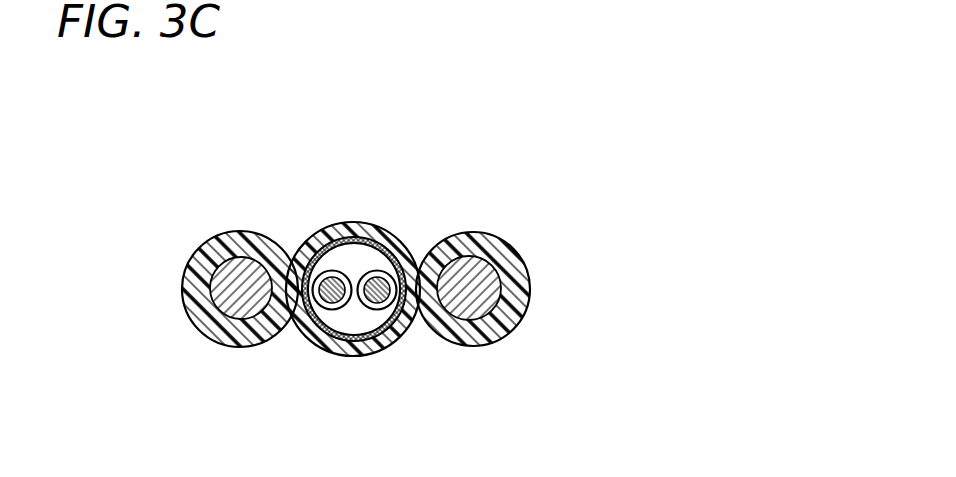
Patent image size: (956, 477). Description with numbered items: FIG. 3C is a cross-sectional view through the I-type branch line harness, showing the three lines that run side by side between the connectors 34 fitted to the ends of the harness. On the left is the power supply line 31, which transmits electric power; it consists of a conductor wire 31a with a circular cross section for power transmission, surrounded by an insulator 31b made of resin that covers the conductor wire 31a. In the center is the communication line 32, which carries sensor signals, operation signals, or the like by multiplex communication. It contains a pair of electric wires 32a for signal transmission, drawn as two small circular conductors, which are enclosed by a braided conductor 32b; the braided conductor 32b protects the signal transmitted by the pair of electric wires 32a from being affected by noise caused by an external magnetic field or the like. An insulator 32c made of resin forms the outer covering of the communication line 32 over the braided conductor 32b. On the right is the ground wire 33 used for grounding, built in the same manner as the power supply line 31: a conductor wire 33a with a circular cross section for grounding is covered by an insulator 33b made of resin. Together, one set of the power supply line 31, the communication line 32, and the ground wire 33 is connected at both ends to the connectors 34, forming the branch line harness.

The power supply line 31 is at (250, 128).
The conductor wire 31a is at (228, 282).
The insulator 31b is at (223, 262).
The communication line 32 is at (450, 108).
The pair of electric wires 32a is at (375, 270).
The braided conductor 32b is at (375, 240).
The insulator 32c is at (389, 248).
The ground wire 33 is at (583, 128).
The conductor wire 33a is at (475, 272).
The insulator 33b is at (508, 246).
The connector 34 is at (444, 0).